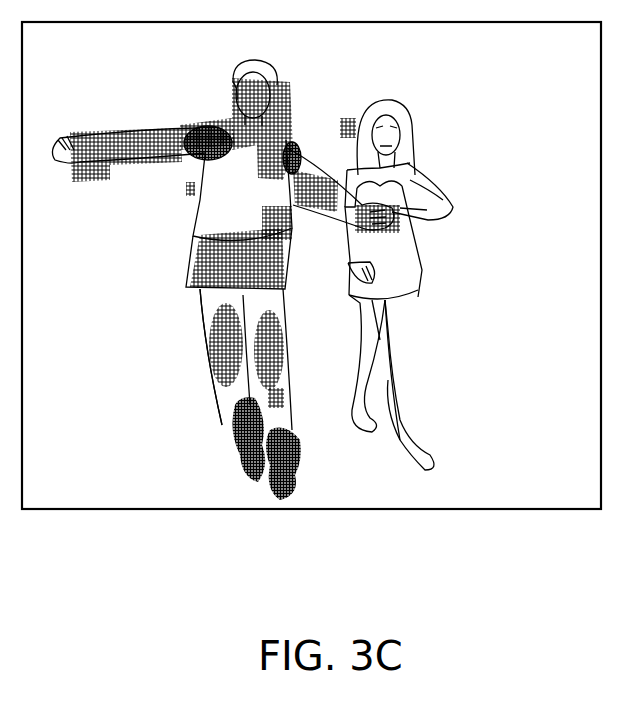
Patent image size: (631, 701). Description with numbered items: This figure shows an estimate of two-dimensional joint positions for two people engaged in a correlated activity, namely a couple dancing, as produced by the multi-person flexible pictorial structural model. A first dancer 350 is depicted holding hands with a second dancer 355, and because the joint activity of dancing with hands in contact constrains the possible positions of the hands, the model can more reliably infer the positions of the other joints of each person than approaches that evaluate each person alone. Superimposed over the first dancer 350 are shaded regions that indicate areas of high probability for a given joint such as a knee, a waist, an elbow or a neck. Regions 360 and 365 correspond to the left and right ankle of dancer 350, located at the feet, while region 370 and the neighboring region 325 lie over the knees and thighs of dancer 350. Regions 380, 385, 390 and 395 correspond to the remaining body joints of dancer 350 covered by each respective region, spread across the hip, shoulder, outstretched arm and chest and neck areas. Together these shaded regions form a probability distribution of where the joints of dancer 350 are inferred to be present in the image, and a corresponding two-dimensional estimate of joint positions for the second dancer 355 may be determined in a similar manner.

The shaded region 390 is at (110, 153).
The shaded region 385 is at (220, 120).
The shaded region 395 is at (268, 125).
The shaded region 380 is at (200, 258).
The first dancer 350 is at (200, 297).
The shaded region 370 is at (235, 365).
The right thigh area 325 is at (277, 375).
The shaded region 360 is at (247, 433).
The shaded region 365 is at (287, 450).
The second dancer 355 is at (412, 367).